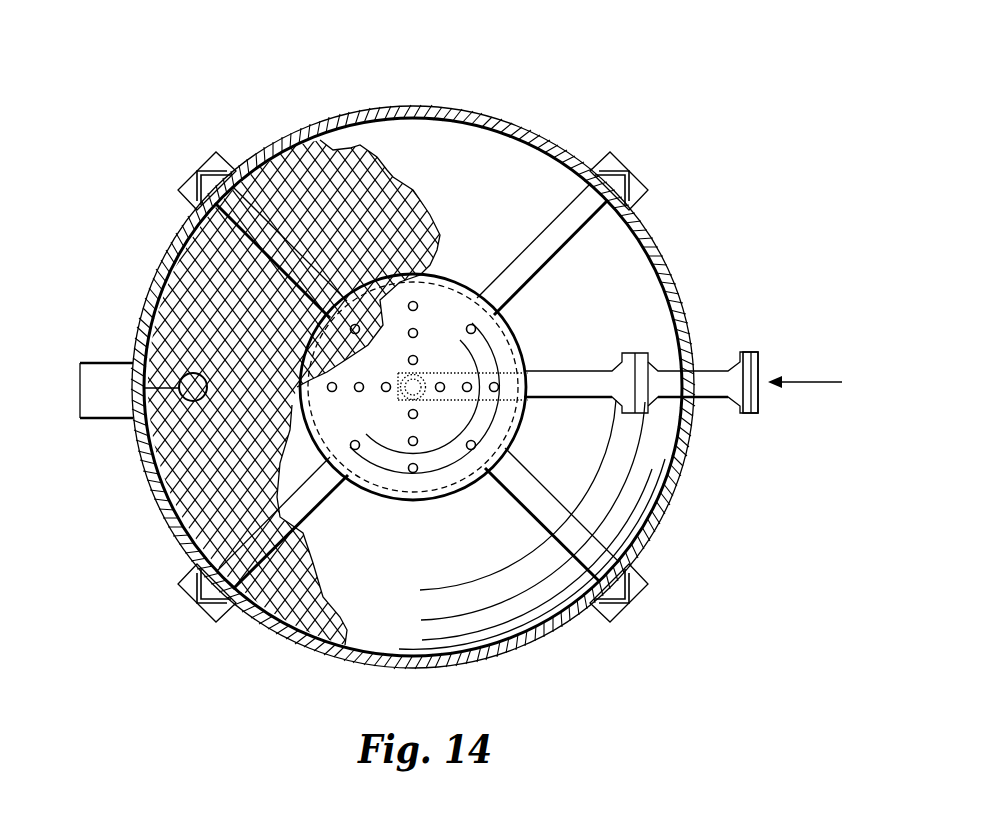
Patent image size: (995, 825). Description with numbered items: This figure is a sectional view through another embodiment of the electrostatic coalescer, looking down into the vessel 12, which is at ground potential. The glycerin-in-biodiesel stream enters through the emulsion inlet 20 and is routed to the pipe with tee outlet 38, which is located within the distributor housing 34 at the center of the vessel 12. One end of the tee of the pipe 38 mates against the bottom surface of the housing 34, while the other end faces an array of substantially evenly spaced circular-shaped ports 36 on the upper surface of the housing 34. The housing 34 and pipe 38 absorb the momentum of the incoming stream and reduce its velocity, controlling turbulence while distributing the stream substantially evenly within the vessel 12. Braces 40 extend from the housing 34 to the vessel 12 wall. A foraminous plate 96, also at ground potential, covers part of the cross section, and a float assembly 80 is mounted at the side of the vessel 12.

The vessel 12 is at (350, 118).
The foraminous plate 96 is at (428, 195).
The port 36 is at (415, 302).
The brace 40 is at (553, 267).
The emulsion inlet 20 is at (753, 350).
The pipe with tee outlet 38 is at (557, 400).
The distributor housing 34 is at (428, 502).
The float assembly 80 is at (143, 455).